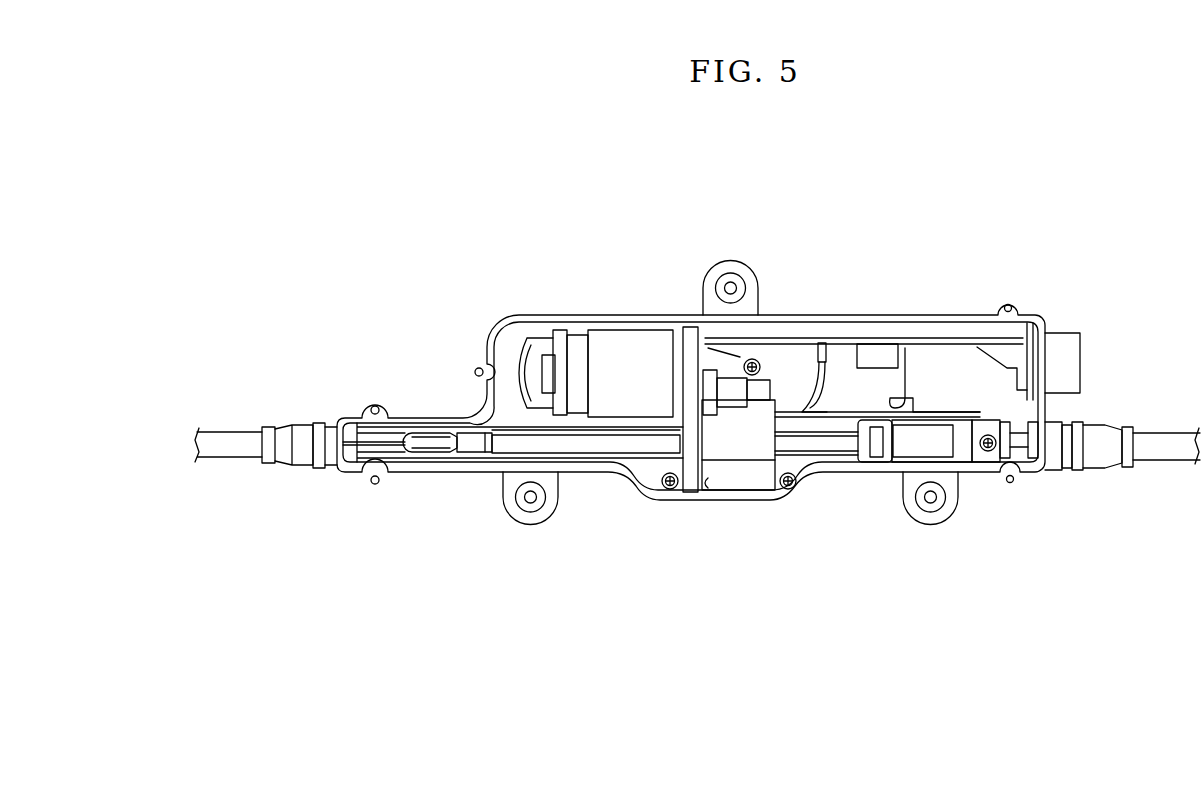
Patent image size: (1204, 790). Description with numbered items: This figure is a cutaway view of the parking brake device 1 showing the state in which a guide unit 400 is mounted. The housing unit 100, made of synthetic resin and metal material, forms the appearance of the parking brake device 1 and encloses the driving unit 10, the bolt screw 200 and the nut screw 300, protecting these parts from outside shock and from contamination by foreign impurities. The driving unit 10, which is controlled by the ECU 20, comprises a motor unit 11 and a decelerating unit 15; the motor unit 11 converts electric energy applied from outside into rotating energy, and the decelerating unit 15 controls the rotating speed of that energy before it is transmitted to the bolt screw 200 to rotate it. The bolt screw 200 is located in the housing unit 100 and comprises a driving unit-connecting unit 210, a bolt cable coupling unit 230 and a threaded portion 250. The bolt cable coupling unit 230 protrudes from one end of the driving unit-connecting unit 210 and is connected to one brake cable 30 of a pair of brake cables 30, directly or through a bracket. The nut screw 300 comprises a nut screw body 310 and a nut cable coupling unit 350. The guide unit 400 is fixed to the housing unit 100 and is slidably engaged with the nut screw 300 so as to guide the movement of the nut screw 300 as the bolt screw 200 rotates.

The parking brake device 1 is at (1099, 200).
The driving unit 10 is at (644, 362).
The motor unit 11 is at (625, 342).
The decelerating unit 15 is at (740, 417).
The ECU 20 is at (872, 338).
The brake cable 30 is at (223, 443).
The housing unit 100 is at (508, 318).
The bolt screw 200 is at (765, 493).
The driving unit-connecting unit 210 is at (795, 449).
The bolt cable coupling unit 230 is at (940, 483).
The threaded portion 250 is at (643, 455).
The nut screw 300 is at (447, 502).
The nut screw body 310 is at (477, 452).
The nut cable coupling unit 350 is at (430, 452).
The guide unit 400 is at (407, 428).